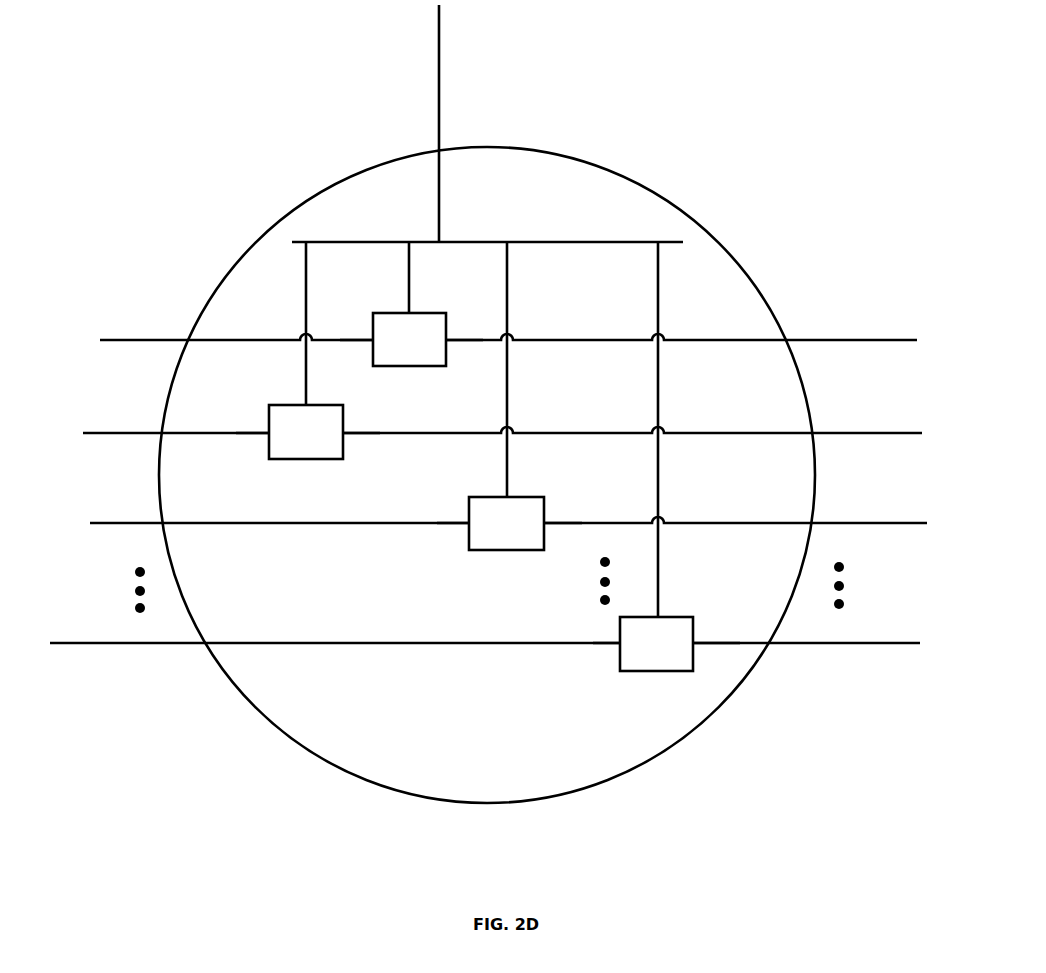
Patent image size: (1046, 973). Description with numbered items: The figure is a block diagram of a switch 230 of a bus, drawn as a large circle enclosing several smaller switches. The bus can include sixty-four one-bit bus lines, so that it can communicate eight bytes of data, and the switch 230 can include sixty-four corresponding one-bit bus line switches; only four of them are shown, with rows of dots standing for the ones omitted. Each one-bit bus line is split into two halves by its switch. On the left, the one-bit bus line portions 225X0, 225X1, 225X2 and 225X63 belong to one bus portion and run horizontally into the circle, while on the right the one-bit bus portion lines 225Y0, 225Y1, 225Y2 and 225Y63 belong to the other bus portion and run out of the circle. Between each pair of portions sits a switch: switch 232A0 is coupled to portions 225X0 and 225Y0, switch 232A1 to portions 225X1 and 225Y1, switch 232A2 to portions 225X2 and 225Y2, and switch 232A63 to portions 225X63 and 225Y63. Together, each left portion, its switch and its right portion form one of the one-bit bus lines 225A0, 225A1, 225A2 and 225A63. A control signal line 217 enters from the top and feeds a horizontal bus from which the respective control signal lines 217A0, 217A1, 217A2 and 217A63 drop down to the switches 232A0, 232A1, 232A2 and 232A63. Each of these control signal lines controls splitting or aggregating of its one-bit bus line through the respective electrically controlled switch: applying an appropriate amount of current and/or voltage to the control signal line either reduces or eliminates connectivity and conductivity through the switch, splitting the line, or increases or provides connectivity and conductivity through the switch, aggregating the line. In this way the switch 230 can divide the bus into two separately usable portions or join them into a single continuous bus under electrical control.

The control signal line 217 is at (439, 105).
The control signal line 217A0 is at (409, 270).
The control signal line 217A1 is at (305, 300).
The control signal line 217A2 is at (555, 290).
The control signal line 217A63 is at (658, 302).
The one-bit bus line portion 225X0 is at (162, 340).
The one-bit bus line portion 225X1 is at (148, 433).
The one-bit bus line portion 225X2 is at (135, 523).
The one-bit bus line portion 225X63 is at (95, 643).
The one-bit bus portion line 225Y0 is at (880, 341).
The one-bit bus portion line 225Y1 is at (893, 431).
The one-bit bus portion line 225Y2 is at (895, 521).
The one-bit bus portion line 225Y63 is at (890, 642).
The one-bit bus line 225A0 is at (340, 341).
The one-bit bus line 225A1 is at (236, 434).
The one-bit bus line 225A2 is at (437, 524).
The one-bit bus line 225A63 is at (593, 645).
The switch 232A0 is at (409, 339).
The switch 232A1 is at (306, 432).
The switch 232A2 is at (506, 523).
The switch 232A63 is at (656, 644).
The switch 230 is at (487, 475).